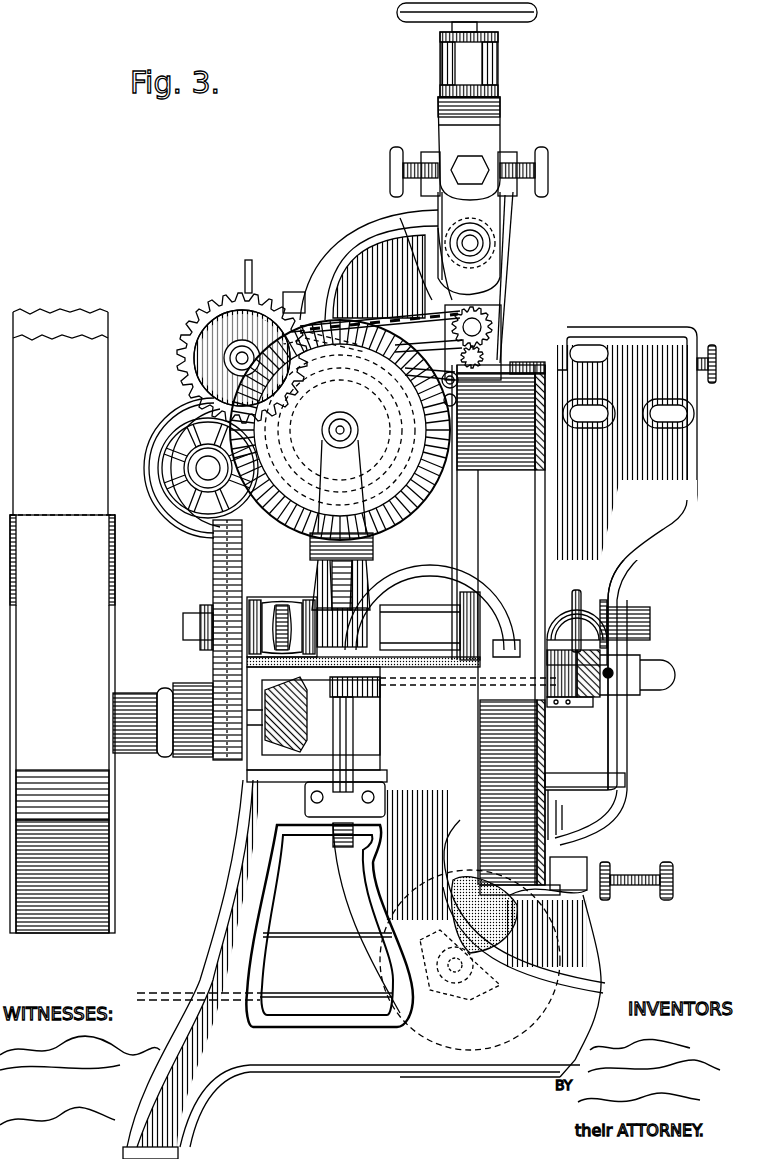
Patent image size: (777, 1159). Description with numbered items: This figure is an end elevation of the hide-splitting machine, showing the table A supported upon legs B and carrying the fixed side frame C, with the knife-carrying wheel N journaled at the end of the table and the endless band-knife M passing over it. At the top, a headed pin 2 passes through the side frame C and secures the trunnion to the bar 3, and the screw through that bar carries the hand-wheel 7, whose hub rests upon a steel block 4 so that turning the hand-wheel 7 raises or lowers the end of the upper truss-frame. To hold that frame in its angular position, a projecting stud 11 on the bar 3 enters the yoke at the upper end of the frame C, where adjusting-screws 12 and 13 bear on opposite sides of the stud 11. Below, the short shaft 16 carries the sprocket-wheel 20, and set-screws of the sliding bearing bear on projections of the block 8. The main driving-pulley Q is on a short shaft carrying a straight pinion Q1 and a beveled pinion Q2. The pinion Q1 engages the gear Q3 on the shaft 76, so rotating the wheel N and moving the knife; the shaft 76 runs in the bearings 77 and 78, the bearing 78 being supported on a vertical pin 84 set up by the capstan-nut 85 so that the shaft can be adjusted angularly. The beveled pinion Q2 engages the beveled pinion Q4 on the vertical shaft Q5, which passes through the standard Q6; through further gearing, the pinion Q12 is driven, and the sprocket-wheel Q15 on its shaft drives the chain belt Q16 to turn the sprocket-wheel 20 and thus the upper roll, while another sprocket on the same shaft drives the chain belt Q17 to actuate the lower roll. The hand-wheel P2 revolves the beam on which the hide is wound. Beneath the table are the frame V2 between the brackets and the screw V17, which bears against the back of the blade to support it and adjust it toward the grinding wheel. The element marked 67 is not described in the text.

The hand-wheel 7 is at (471, 19).
The steel block 4 is at (476, 64).
The bar 3 is at (500, 134).
The adjusting-screw 12 is at (410, 165).
The adjusting-screw 13 is at (527, 165).
The projecting stud 11 is at (468, 166).
The side frame C is at (710, 495).
The headed pin 2 is at (483, 241).
The block 8 is at (515, 279).
The short shaft 16 is at (497, 318).
The sprocket-wheel 20 is at (487, 332).
The chain belt Q16 is at (388, 312).
The pinion Q12 is at (242, 341).
The sprocket-wheel Q15 is at (466, 412).
The hand-wheel P2 is at (185, 412).
The chain belt Q17 is at (358, 422).
The standard Q6 is at (372, 568).
The gear Q3 is at (212, 640).
The bearing 77 is at (282, 598).
The bearing 78 is at (493, 618).
The shaft 76 is at (629, 607).
The knife-carrying wheel N is at (547, 560).
The band-knife M is at (515, 374).
The screw 67 is at (714, 353).
The table A is at (647, 674).
The vertical pin 84 is at (558, 703).
The capstan-nut 85 is at (583, 707).
The main driving-pulley Q is at (62, 621).
The straight pinion Q1 is at (206, 757).
The beveled pinion Q2 is at (290, 740).
The beveled pinion Q4 is at (380, 692).
The vertical shaft Q5 is at (355, 730).
The legs B is at (351, 964).
The frame V2 is at (492, 948).
The screw V17 is at (675, 880).